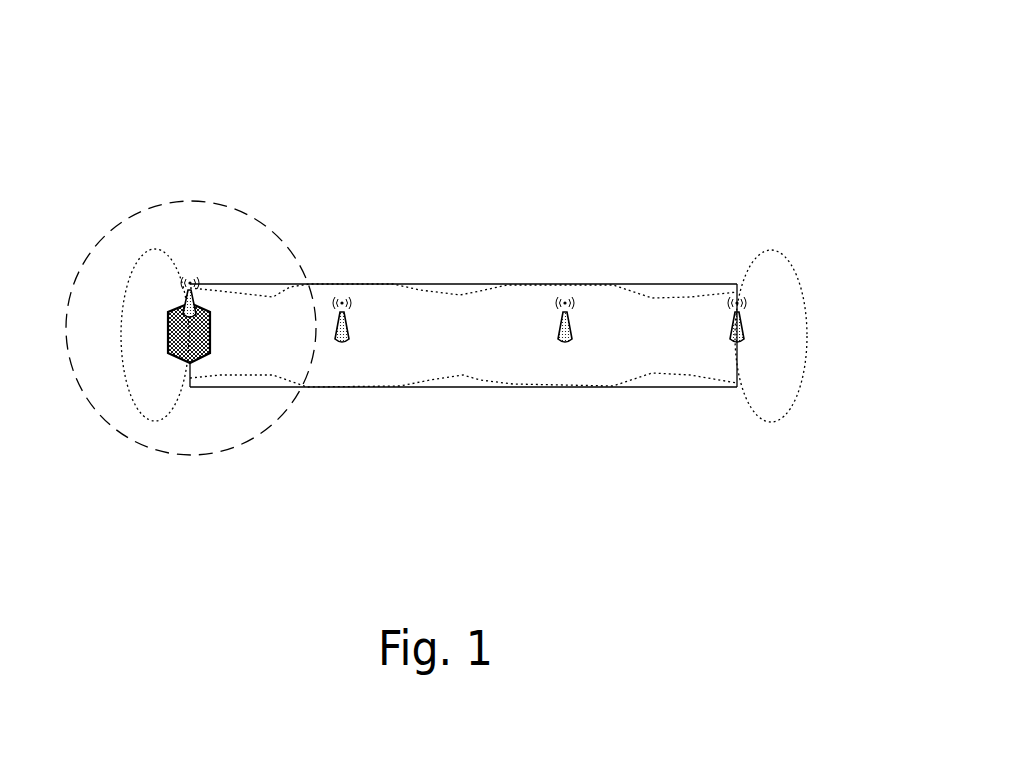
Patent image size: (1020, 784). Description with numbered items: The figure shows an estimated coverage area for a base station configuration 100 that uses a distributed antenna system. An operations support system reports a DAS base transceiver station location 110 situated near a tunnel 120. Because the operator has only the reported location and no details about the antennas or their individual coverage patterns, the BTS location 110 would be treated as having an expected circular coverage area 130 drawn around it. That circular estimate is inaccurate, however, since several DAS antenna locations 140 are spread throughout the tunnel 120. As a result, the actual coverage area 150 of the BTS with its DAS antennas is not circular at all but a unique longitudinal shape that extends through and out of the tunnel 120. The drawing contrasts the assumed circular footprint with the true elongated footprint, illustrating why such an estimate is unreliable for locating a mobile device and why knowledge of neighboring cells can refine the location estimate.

The configuration 100 is at (775, 36).
The OSS reported DAS base transceiver station location 110 is at (168, 327).
The tunnel 120 is at (481, 388).
The expected circular coverage area 130 is at (272, 422).
The DAS antenna locations 140 is at (728, 297).
The actual coverage area 150 is at (785, 262).